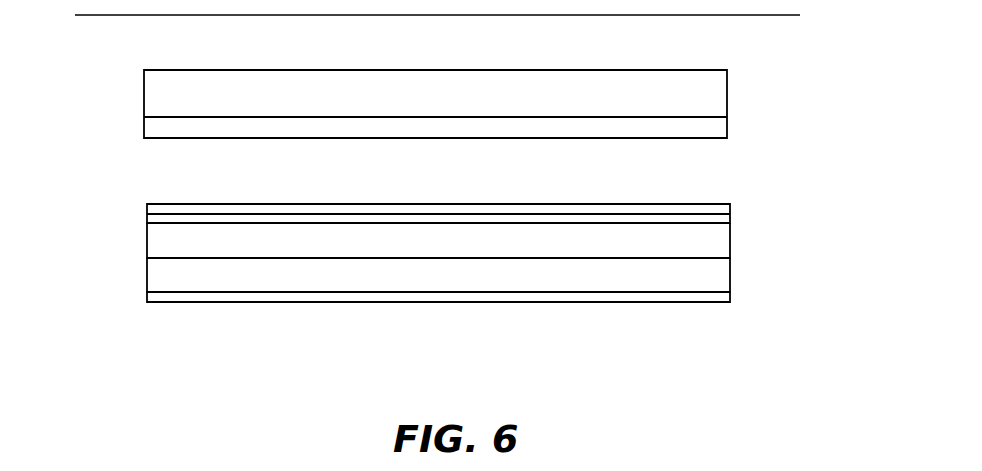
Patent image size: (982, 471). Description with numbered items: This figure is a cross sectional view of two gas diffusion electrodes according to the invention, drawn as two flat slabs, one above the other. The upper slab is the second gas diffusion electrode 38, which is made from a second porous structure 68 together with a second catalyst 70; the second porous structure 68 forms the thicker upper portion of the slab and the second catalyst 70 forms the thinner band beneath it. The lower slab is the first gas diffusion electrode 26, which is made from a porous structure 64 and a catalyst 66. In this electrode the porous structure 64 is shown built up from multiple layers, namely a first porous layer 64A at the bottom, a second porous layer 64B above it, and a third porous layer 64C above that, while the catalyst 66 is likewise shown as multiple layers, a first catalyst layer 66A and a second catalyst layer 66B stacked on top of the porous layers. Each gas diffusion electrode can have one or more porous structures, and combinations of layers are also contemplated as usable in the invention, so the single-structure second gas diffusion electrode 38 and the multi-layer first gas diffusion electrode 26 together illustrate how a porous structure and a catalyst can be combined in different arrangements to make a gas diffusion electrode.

The first gas diffusion electrode 26 is at (448, 287).
The second gas diffusion electrode 38 is at (674, 70).
The porous structure 64 is at (451, 271).
The layer of porous structure 64A is at (727, 296).
The layer of porous structure 64B is at (725, 275).
The layer of porous structure 64C is at (725, 246).
The catalyst 66 is at (443, 209).
The layer of catalyst 66A is at (725, 218).
The layer of catalyst 66B is at (728, 206).
The second porous structure 68 is at (165, 90).
The second catalyst 70 is at (165, 126).